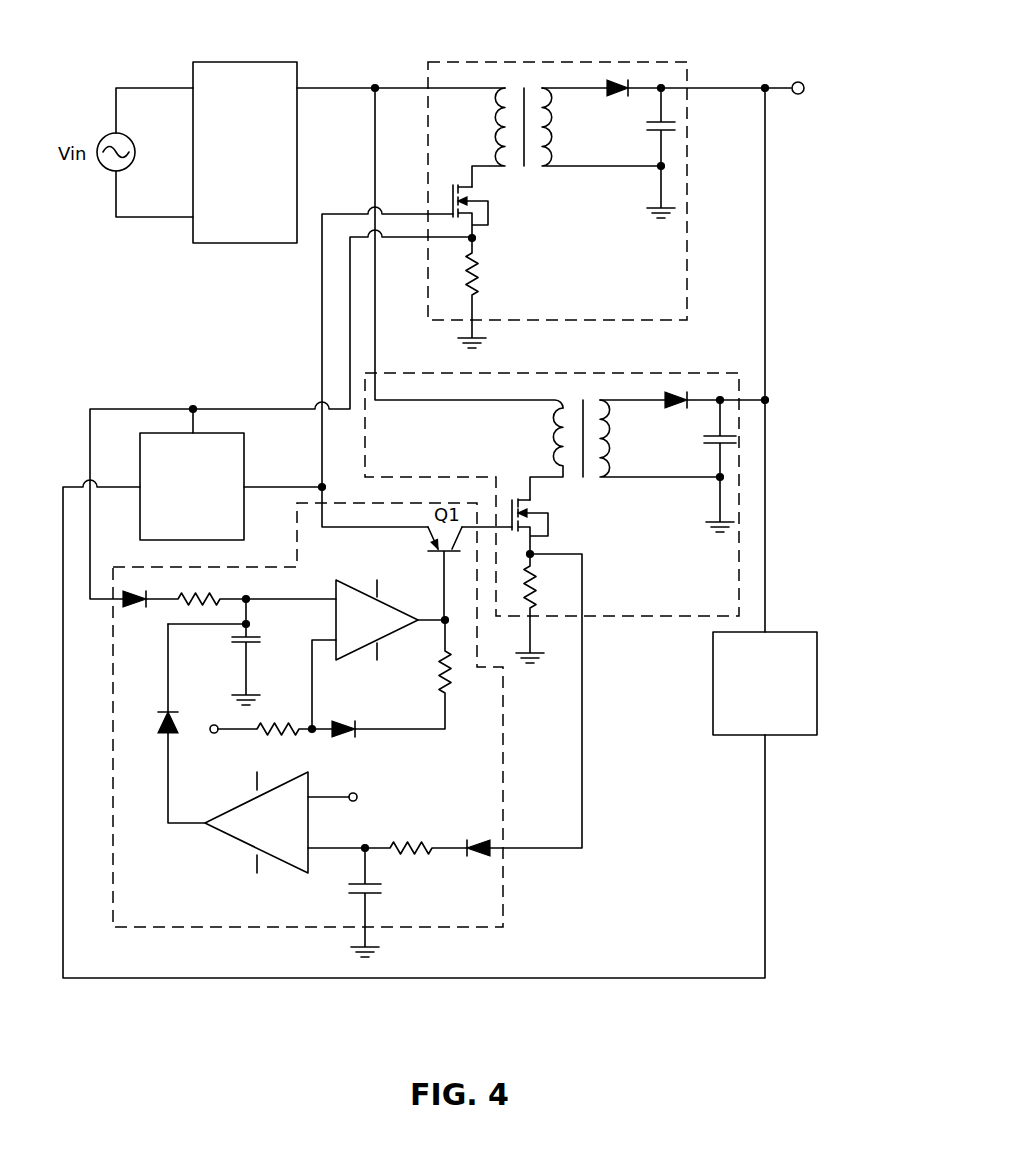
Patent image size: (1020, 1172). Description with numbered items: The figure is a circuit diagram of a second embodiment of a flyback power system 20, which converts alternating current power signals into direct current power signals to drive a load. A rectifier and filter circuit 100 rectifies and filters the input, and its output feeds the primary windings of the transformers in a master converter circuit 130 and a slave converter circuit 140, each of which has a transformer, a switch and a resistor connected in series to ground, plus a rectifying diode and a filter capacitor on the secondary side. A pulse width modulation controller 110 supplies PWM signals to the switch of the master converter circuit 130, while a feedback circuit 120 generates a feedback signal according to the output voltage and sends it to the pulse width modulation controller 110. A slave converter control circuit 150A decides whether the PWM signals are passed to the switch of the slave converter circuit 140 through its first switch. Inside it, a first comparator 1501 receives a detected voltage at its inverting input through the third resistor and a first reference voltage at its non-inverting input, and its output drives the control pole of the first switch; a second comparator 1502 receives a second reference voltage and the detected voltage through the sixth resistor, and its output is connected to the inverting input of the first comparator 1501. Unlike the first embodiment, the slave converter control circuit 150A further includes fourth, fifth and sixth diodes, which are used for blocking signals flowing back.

The flyback power system 20 is at (480, 30).
The rectifier and filter circuit 100 is at (228, 62).
The pulse width modulation (PWM) controller 110 is at (245, 455).
The feedback circuit 120 is at (780, 632).
The master converter circuit 130 is at (600, 62).
The slave converter circuit 140 is at (657, 373).
The slave converter control circuit 150A is at (334, 730).
The first comparator 1501 is at (348, 580).
The second comparator 1502 is at (308, 775).